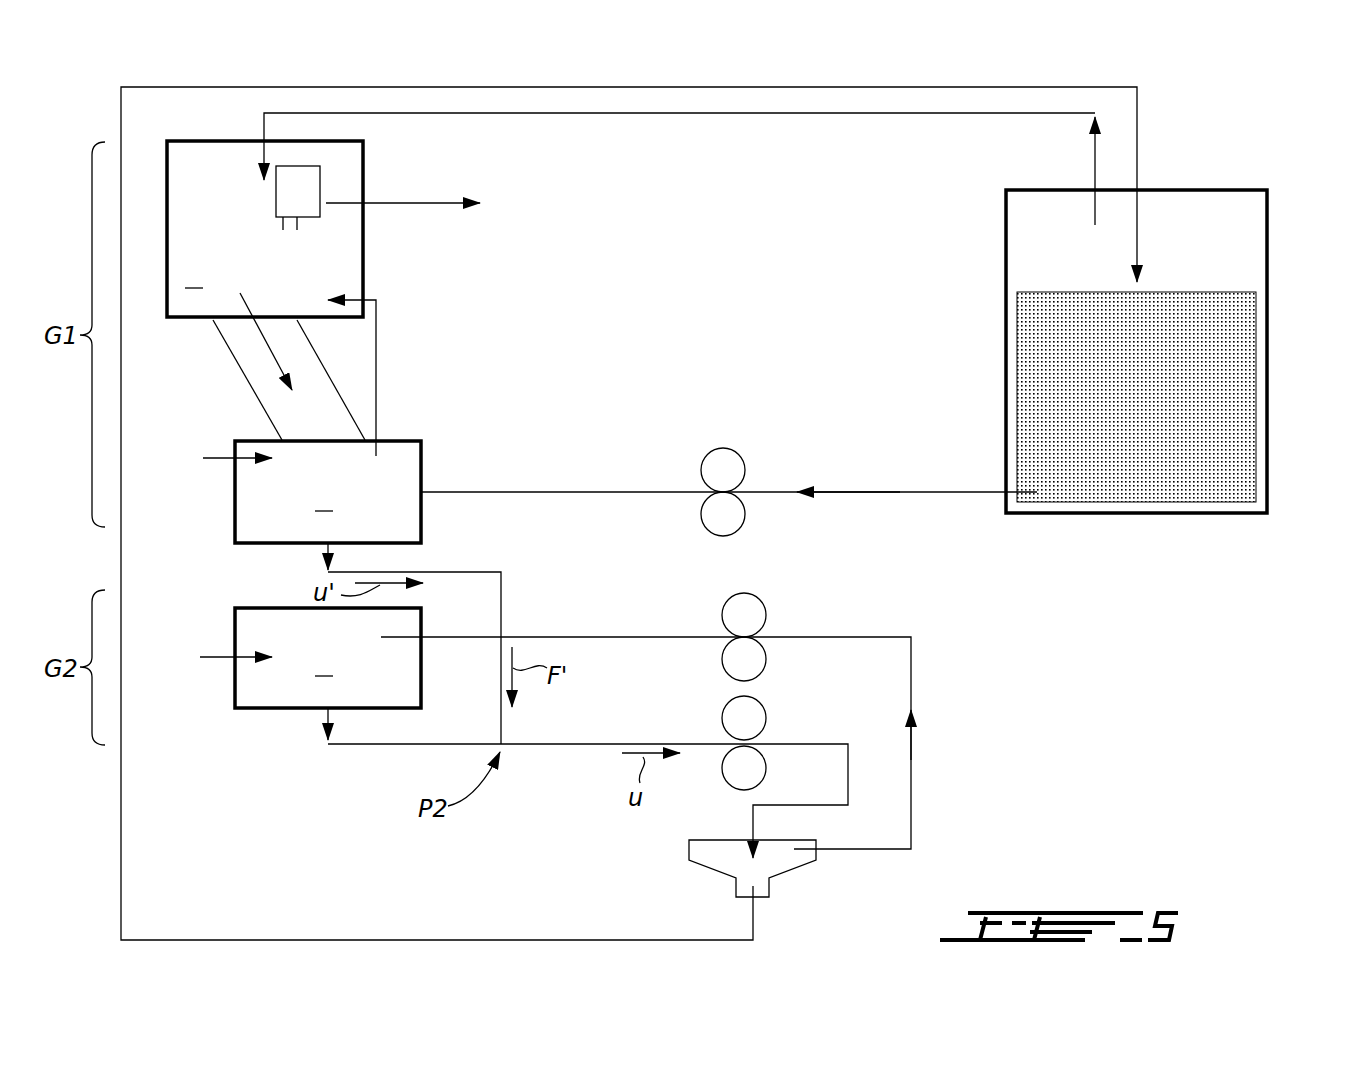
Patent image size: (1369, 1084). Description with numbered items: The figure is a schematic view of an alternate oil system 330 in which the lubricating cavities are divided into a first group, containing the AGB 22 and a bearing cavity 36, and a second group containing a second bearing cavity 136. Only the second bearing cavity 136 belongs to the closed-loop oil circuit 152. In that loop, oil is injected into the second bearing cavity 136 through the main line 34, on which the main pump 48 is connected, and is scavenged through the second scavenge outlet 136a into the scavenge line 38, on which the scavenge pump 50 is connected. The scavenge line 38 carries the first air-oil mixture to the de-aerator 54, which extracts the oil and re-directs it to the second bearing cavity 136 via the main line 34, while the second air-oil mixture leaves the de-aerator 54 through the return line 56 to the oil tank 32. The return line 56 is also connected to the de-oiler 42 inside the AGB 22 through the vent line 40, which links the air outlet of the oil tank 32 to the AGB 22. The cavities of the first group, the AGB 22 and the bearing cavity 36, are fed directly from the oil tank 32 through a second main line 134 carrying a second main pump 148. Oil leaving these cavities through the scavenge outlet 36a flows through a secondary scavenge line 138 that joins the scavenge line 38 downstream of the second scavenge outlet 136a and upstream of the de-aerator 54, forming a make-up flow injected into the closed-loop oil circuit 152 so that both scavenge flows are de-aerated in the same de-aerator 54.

The oil system 330 is at (1195, 117).
The vent line 40 is at (766, 114).
The de-oiler 42 is at (320, 179).
The AGB 22 is at (363, 252).
The oil tank 32 is at (1268, 262).
The second main pump 148 is at (757, 470).
The second main line 134 is at (903, 490).
The bearing cavity 36 is at (235, 497).
The scavenge outlet 36a is at (313, 551).
The secondary scavenge line 138 is at (468, 572).
The main pump 48 is at (776, 622).
The second bearing cavity 136 is at (235, 694).
The second scavenge outlet 136a is at (313, 722).
The scavenge pump 50 is at (775, 735).
The main line 34 is at (911, 676).
The scavenge line 38 is at (603, 743).
The de-aerator 54 is at (797, 880).
The closed-loop oil circuit 152 is at (540, 795).
The return line 56 is at (245, 940).